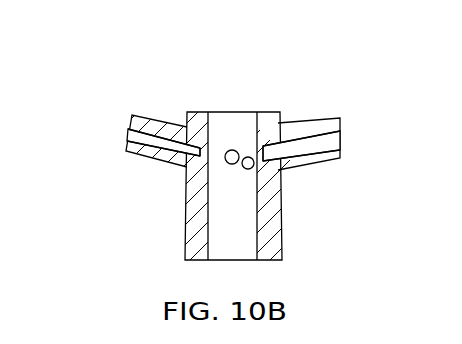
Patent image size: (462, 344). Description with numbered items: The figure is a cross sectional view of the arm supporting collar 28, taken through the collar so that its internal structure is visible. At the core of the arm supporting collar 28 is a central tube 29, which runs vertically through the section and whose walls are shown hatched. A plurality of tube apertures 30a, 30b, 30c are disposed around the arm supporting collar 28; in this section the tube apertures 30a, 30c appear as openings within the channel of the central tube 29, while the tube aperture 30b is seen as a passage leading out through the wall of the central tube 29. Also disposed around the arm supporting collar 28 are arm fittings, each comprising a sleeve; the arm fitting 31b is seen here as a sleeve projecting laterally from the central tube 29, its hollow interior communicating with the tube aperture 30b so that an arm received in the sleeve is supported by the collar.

The arm supporting collar 28 is at (240, 184).
The central tube 29 is at (206, 238).
The tube aperture 30a is at (249, 157).
The tube aperture 30b is at (338, 117).
The tube aperture 30c is at (232, 150).
The arm fitting 31b is at (153, 135).